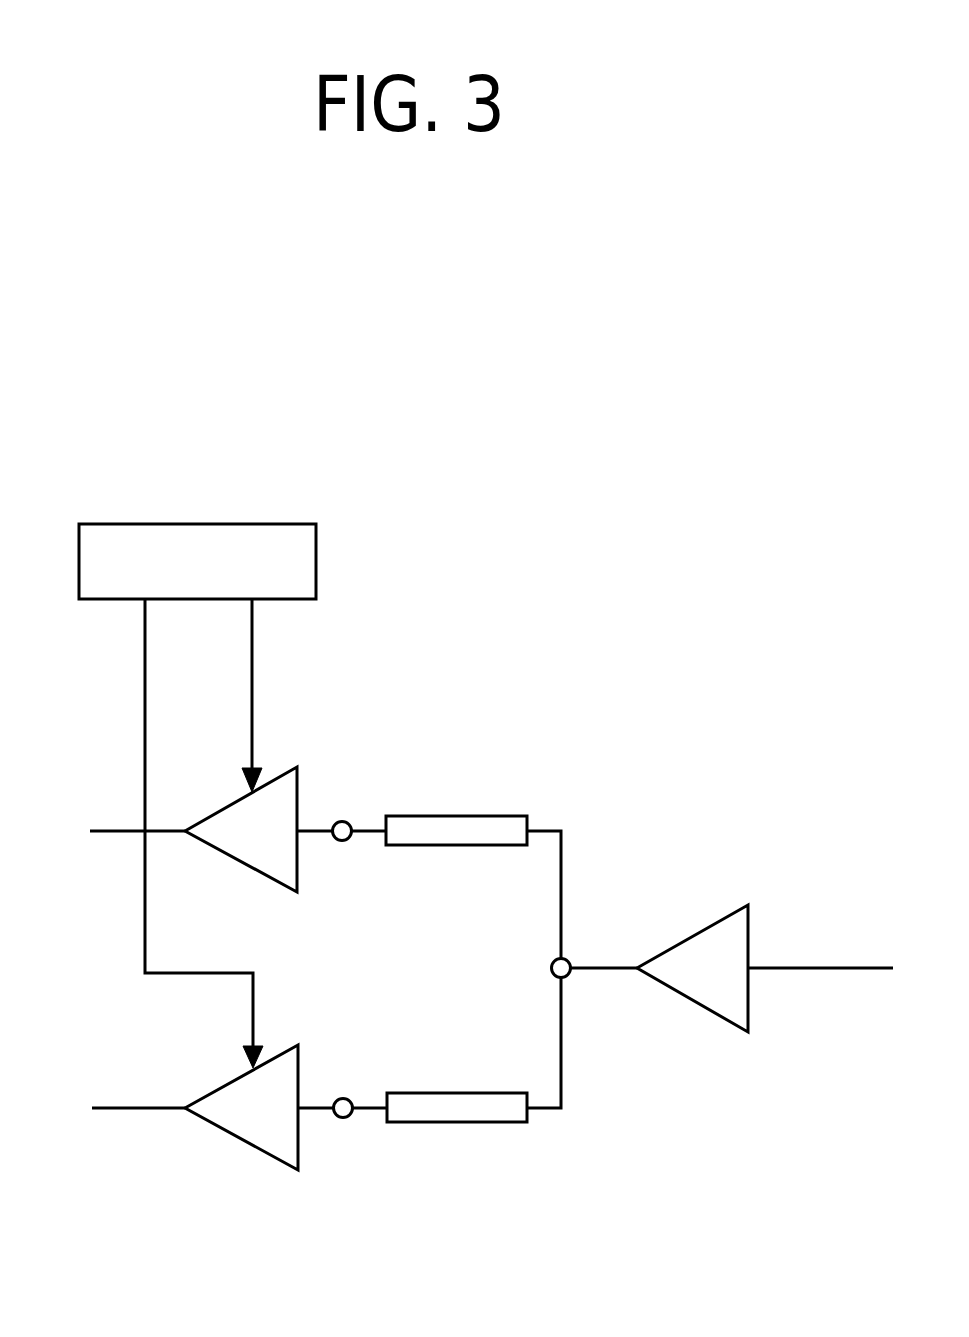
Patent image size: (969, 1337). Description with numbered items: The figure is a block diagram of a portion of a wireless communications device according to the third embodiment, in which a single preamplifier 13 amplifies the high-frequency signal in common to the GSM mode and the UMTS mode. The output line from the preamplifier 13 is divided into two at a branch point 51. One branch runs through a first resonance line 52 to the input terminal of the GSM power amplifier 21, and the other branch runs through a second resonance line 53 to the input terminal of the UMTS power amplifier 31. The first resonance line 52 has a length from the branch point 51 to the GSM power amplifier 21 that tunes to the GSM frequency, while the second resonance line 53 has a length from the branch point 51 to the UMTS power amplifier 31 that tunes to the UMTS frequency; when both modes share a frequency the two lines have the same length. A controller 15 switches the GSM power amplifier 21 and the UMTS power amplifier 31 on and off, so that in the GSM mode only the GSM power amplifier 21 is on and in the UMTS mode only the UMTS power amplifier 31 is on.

The controller 15 is at (197, 523).
The GSM power amplifier 21 is at (237, 863).
The UMTS power amplifier 31 is at (232, 1137).
The preamplifier 13 is at (697, 1003).
The branch point 51 is at (567, 962).
The first resonance line 52 is at (457, 847).
The second resonance line 53 is at (458, 1123).